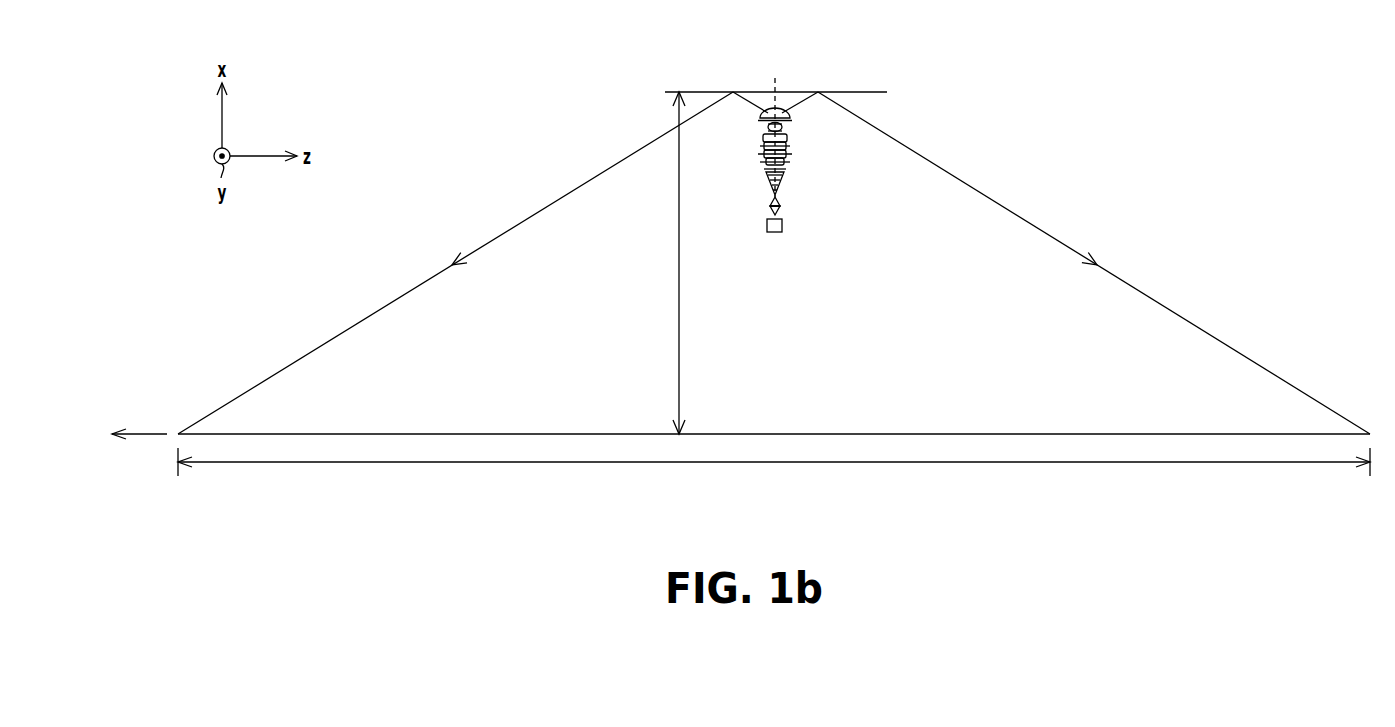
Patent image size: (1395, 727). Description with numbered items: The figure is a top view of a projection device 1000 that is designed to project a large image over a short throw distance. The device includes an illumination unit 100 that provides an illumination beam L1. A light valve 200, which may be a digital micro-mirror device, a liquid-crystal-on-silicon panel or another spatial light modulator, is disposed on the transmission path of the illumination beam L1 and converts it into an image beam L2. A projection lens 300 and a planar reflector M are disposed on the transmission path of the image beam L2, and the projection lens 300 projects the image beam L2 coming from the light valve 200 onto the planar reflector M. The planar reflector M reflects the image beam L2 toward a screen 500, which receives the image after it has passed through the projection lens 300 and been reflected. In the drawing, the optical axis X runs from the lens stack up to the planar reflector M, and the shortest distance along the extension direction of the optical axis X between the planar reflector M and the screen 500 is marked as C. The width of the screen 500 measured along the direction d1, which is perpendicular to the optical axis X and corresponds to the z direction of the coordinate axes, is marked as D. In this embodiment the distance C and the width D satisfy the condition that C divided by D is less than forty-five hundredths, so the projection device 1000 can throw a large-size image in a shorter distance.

The illumination unit 100 is at (783, 227).
The light valve 200 is at (770, 205).
The projection lens 300 is at (752, 113).
The screen 500 is at (1292, 434).
The projection device 1000 is at (1329, 537).
The illumination beam L1 is at (779, 210).
The image beam L2 is at (782, 202).
The planar reflector M is at (867, 92).
The optical axis X is at (775, 79).
The shortest distance C is at (672, 263).
The width of the screen D is at (774, 472).
The direction d1 is at (139, 449).